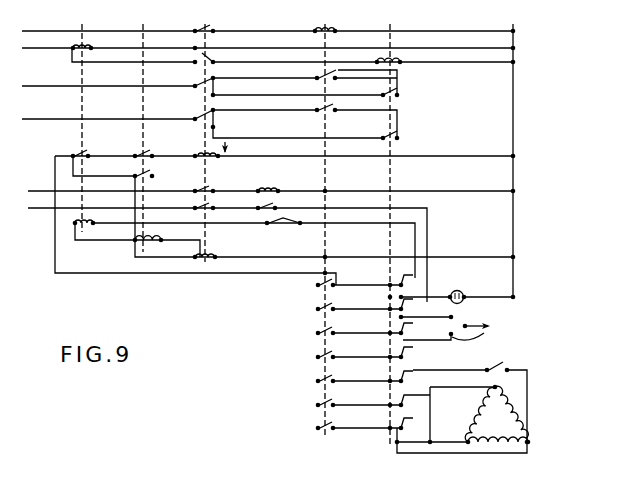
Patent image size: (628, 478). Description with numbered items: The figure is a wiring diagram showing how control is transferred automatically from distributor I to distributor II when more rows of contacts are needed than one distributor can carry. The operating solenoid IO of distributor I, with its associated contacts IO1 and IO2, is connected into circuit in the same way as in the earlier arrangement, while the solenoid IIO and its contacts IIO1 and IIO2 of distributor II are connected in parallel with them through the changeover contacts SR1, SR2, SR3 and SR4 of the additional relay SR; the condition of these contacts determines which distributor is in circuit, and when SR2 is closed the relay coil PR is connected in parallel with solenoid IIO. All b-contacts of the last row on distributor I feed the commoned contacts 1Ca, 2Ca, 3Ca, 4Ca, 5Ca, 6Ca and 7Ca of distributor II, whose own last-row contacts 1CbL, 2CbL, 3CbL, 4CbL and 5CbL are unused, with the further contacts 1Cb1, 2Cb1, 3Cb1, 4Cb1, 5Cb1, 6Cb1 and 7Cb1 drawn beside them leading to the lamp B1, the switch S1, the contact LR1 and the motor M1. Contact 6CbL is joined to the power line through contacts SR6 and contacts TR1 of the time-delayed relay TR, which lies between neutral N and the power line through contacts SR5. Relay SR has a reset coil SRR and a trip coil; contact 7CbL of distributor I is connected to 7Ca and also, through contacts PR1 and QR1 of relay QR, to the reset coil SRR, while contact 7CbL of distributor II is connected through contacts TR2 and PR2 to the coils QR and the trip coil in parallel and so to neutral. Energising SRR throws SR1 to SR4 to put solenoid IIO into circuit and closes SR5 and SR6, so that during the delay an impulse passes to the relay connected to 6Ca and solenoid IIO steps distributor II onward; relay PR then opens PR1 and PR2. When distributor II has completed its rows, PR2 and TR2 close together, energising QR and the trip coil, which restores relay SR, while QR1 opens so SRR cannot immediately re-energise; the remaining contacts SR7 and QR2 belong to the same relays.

The relay coil PR is at (84, 118).
The relay QR is at (146, 128).
The additional relay SR is at (201, 135).
The operating solenoid of distributor I IO is at (325, 219).
The operating solenoid of distributor II IIO is at (388, 225).
The neutral N is at (512, 151).
The contacts SR1 is at (220, 38).
The contacts SR2 is at (220, 56).
The contacts SR3 is at (221, 87).
The contacts SR4 is at (221, 119).
The contacts SR5 is at (219, 182).
The contacts SR6 is at (213, 204).
The SR coil 7 SR7 is at (220, 258).
The reset coil SRR is at (200, 152).
The contacts PR1 is at (94, 146).
The contacts PR2 is at (75, 223).
The contacts QR1 is at (157, 146).
The QR contact 2 QR2 is at (160, 175).
The time-delayed relay TR is at (268, 188).
The contacts TR1 is at (272, 205).
The contacts TR2 is at (283, 222).
The contacts IO1 is at (339, 103).
The contacts IO2 is at (400, 72).
The contacts IIO1 is at (407, 129).
The contacts IIO2 is at (407, 87).
The contact 1Ca is at (312, 428).
The contact 2Ca is at (312, 405).
The contact 3Ca is at (312, 381).
The contact 4Ca is at (312, 357).
The contact 5Ca is at (312, 333).
The contact 6Ca is at (312, 309).
The contact 7Ca is at (312, 285).
The contact 1CbL is at (331, 444).
The contact 2CbL is at (316, 408).
The contact 3CbL is at (316, 384).
The contact 4CbL is at (316, 360).
The contact 5CbL is at (316, 336).
The contact 6CbL is at (316, 312).
The contact 7CbL is at (316, 289).
The contact 1Cb1 is at (405, 437).
The contact 2Cb1 is at (430, 405).
The contact 3Cb1 is at (430, 379).
The contact 4Cb1 is at (430, 358).
The contact 5Cb1 is at (428, 333).
The contact 6Cb1 is at (405, 317).
The contact 7Cb1 is at (410, 297).
The lamp B1 is at (465, 297).
The switch S1 is at (482, 328).
The contact LR1 is at (498, 368).
The motor M1 is at (514, 408).